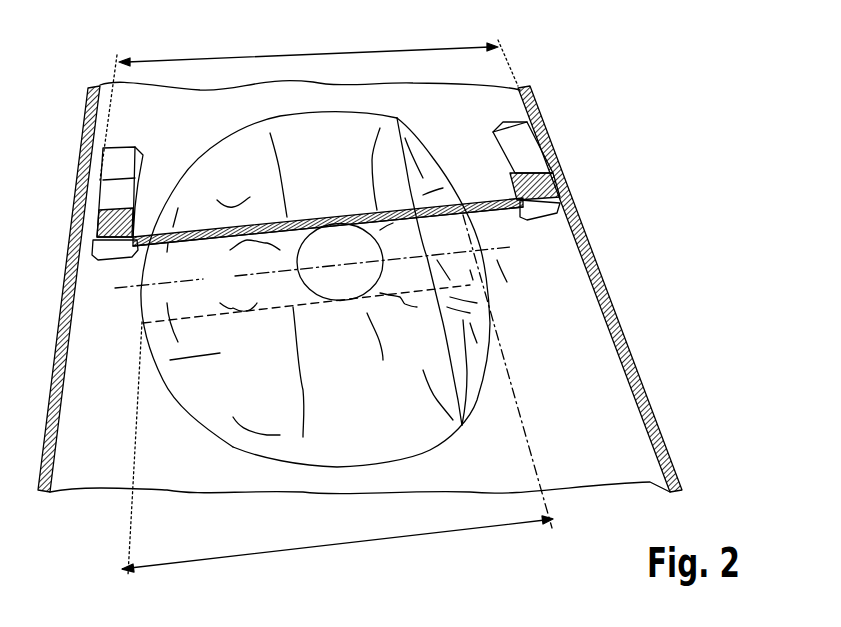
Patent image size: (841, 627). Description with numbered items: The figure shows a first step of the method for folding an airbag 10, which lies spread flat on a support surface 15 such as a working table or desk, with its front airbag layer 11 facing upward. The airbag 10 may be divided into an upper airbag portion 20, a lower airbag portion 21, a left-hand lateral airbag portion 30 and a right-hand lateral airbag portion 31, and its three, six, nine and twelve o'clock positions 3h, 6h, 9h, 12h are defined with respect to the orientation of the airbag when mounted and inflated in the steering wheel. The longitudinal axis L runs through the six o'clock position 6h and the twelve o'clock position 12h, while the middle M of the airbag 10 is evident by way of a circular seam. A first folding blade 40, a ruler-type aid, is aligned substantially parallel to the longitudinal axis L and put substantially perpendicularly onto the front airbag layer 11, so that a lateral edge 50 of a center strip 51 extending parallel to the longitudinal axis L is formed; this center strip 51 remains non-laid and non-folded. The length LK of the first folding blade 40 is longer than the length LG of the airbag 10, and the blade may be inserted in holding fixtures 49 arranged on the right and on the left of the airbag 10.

The airbag 10 is at (183, 160).
The front airbag layer 11 is at (210, 403).
The support surface 15 is at (587, 428).
The upper airbag portion 20 is at (163, 335).
The lower airbag portion 21 is at (483, 323).
The left-hand lateral airbag portion 30 is at (413, 443).
The right-hand lateral airbag portion 31 is at (260, 147).
The first folding blade 40 is at (480, 210).
The holding fixtures 49 is at (112, 191).
The lateral edge 50 is at (468, 222).
The center strip 51 is at (234, 288).
The middle M is at (318, 300).
The longitudinal axis L is at (335, 300).
The 3 o'clock position 3h is at (310, 99).
The 6 o'clock position 6h is at (523, 244).
The 9 o'clock position 9h is at (375, 484).
The 12 o'clock position 12h is at (97, 287).
The length of the first folding blade LK is at (309, 103).
The length of the airbag LG is at (337, 395).